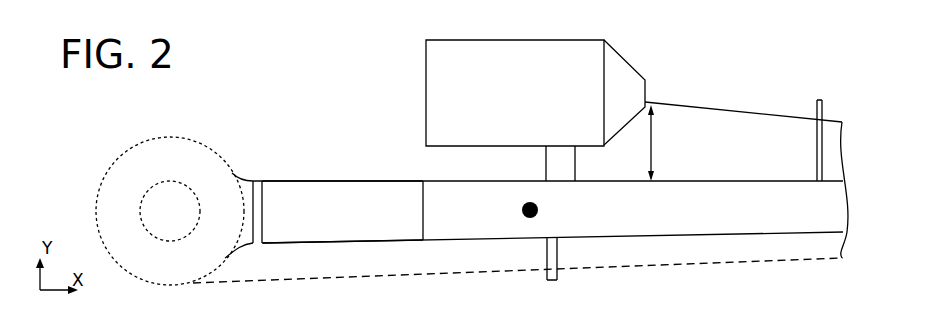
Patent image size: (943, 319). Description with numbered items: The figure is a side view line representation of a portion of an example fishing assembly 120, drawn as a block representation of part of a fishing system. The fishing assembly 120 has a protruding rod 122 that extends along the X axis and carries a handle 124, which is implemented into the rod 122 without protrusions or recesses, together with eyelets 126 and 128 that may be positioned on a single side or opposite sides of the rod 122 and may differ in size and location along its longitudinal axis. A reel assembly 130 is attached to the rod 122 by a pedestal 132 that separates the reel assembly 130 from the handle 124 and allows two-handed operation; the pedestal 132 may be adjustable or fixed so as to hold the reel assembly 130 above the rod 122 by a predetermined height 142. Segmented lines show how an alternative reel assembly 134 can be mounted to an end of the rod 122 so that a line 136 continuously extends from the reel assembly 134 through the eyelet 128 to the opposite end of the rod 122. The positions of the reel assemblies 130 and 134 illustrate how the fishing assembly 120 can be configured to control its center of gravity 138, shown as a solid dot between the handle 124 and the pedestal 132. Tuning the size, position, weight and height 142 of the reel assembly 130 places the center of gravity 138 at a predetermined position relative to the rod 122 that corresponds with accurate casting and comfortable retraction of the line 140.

The fishing assembly 120 is at (754, 60).
The rod 122 is at (550, 190).
The handle 124 is at (342, 212).
The eyelet 126 is at (817, 163).
The eyelet 128 is at (557, 280).
The reel assembly 130 is at (535, 93).
The pedestal 132 is at (546, 163).
The reel assembly 134 is at (173, 139).
The line 136 is at (670, 267).
The center of gravity 138 is at (522, 210).
The line 140 is at (741, 111).
The height 142 is at (670, 143).